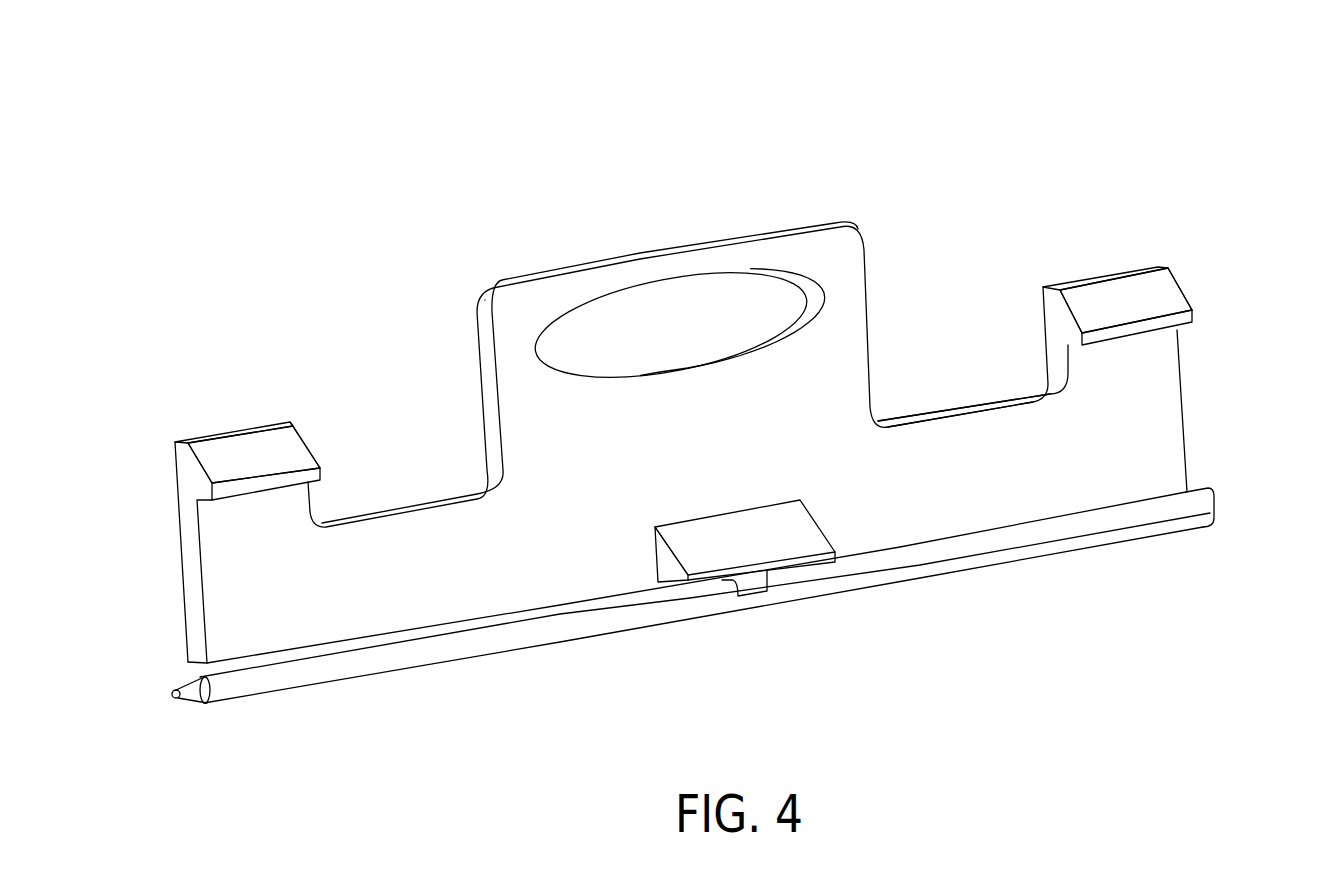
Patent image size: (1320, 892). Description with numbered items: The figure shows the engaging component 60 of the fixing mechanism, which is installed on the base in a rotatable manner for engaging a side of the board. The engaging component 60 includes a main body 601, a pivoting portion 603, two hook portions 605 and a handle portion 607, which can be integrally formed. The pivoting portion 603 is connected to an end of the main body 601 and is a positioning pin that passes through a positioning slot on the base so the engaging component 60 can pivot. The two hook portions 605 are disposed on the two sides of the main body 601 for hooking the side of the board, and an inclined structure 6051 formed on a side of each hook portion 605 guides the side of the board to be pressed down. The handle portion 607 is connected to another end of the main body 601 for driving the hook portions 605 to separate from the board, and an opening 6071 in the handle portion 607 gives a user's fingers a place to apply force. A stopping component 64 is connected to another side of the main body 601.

The engaging component 60 is at (721, 391).
The main body 601 is at (948, 430).
The pivoting portion 603 is at (482, 643).
The hook portion 605 is at (722, 335).
The inclined structure 6051 is at (298, 445).
The handle portion 607 is at (659, 269).
The opening 6071 is at (667, 304).
The stopping component 64 is at (752, 546).